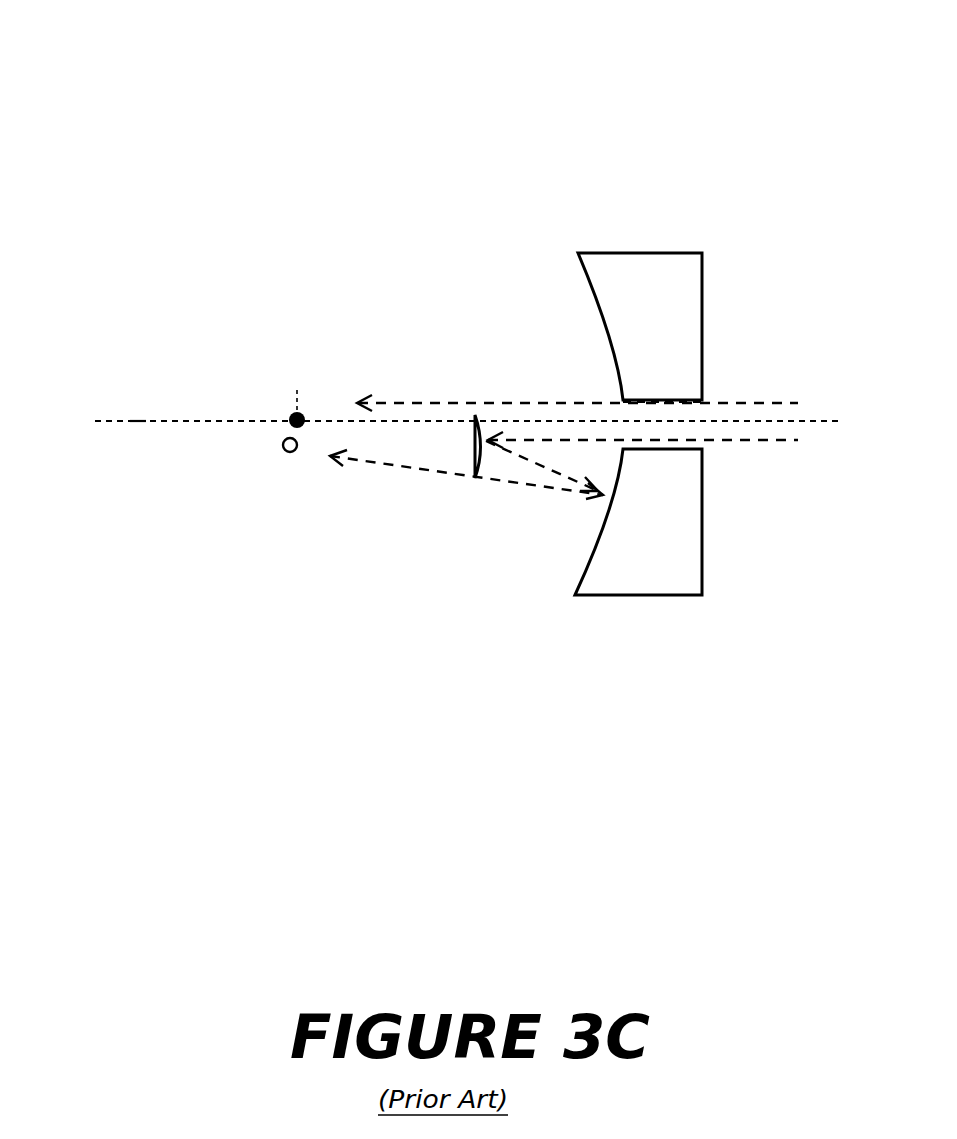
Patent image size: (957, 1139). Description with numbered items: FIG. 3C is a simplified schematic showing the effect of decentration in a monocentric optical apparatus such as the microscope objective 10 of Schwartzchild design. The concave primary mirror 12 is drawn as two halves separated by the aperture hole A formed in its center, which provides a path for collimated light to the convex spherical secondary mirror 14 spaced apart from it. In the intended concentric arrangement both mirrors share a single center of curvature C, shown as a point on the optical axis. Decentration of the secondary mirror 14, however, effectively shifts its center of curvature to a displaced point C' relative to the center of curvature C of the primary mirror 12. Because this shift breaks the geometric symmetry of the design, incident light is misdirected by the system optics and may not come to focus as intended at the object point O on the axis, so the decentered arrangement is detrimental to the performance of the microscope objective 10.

The microscope objective 10 is at (591, 30).
The primary mirror 12 is at (628, 251).
The secondary mirror 14 is at (475, 445).
The aperture hole A is at (693, 407).
The optical axis / object point O is at (138, 420).
The center of curvature C is at (256, 381).
The shifted center of curvature of the secondary mirror C' is at (241, 489).